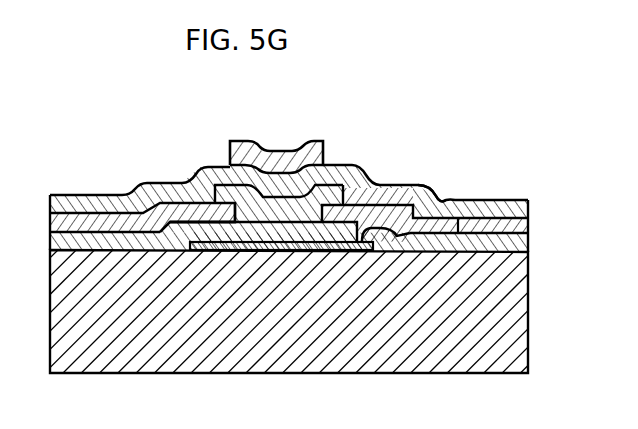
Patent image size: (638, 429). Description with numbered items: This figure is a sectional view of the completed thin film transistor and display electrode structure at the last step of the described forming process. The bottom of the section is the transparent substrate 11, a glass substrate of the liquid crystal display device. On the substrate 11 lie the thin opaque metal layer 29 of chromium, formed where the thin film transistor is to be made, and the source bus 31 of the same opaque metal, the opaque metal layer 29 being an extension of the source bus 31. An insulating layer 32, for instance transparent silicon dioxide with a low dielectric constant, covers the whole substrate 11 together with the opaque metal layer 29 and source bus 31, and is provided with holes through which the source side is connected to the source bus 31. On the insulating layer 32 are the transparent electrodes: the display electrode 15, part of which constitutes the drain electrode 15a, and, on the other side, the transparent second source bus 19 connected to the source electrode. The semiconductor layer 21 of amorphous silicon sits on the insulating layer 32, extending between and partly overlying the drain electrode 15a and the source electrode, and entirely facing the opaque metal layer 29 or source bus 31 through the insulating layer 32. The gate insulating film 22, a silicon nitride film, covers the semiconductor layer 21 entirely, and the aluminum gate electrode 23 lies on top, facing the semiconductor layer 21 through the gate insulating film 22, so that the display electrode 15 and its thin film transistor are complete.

The transparent substrate 11 is at (490, 374).
The display electrode 15 is at (77, 214).
The drain electrode 15a is at (227, 218).
The second source bus 19 is at (438, 202).
The semiconductor layer 21 is at (277, 251).
The gate insulating film 22 is at (400, 184).
The gate electrode 23 is at (279, 149).
The opaque metal layer 29 is at (205, 252).
The source bus 31 is at (357, 245).
The insulating layer 32 is at (120, 238).